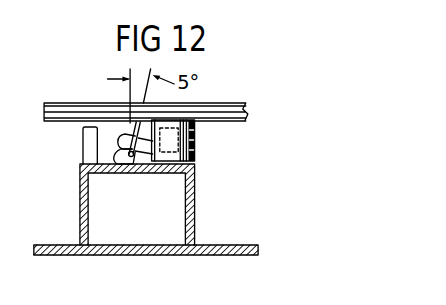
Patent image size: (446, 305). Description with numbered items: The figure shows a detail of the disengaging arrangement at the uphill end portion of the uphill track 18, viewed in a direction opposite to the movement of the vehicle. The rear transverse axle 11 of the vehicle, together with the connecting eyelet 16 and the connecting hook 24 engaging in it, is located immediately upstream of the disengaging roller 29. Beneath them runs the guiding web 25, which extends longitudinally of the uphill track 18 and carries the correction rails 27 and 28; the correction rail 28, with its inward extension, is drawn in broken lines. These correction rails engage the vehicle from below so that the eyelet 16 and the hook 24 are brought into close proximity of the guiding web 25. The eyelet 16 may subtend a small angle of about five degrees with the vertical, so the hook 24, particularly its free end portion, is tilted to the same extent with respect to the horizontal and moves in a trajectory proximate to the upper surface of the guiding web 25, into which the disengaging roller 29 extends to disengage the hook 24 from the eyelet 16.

The rear transverse axle 11 is at (205, 102).
The connecting eyelet 16 is at (132, 155).
The uphill track 18 is at (228, 253).
The connecting hook 24 is at (126, 160).
The guiding web 25 is at (193, 191).
The correction rail 27 is at (83, 140).
The correction rail 28 is at (193, 138).
The disengaging roller 29 is at (193, 152).